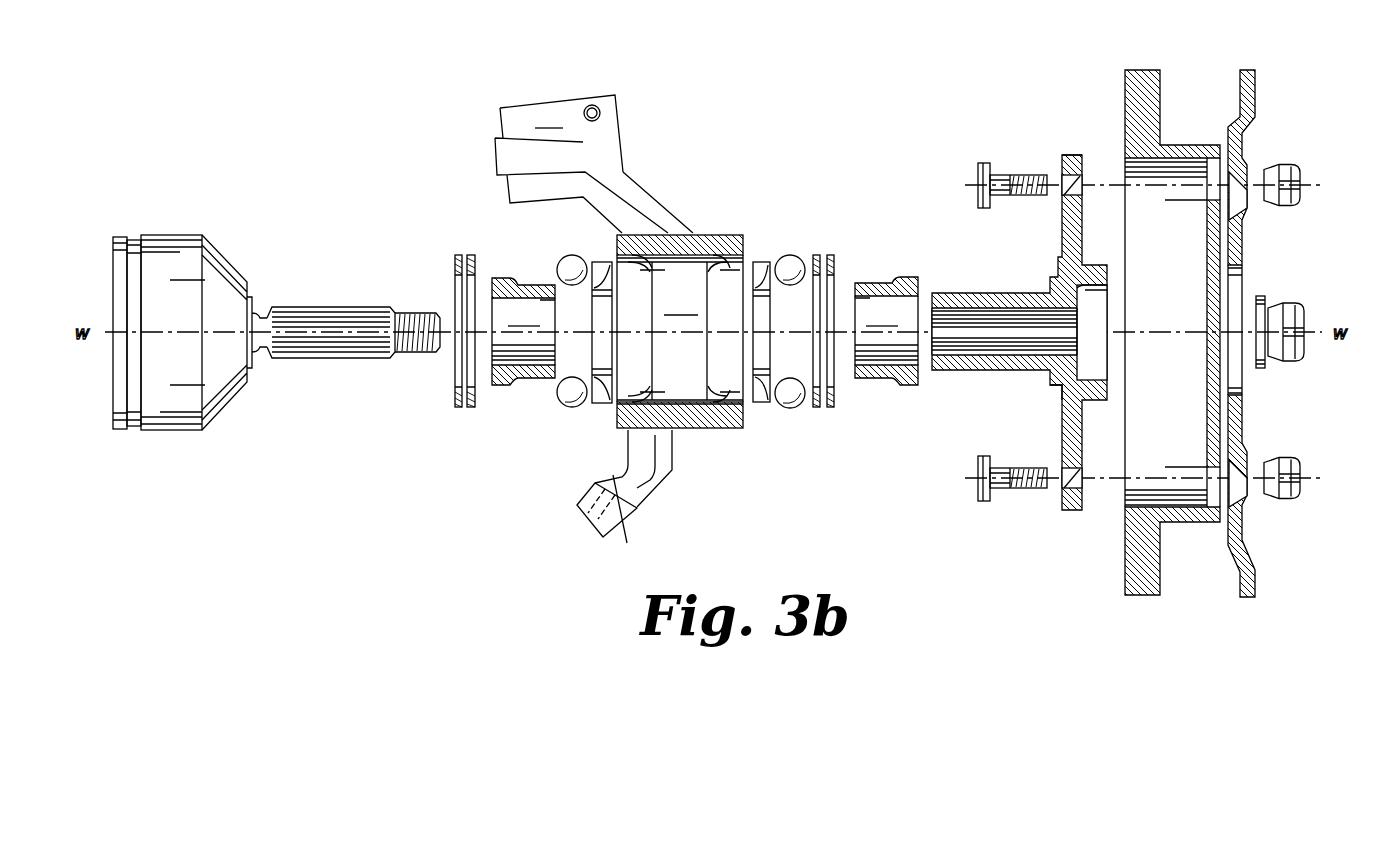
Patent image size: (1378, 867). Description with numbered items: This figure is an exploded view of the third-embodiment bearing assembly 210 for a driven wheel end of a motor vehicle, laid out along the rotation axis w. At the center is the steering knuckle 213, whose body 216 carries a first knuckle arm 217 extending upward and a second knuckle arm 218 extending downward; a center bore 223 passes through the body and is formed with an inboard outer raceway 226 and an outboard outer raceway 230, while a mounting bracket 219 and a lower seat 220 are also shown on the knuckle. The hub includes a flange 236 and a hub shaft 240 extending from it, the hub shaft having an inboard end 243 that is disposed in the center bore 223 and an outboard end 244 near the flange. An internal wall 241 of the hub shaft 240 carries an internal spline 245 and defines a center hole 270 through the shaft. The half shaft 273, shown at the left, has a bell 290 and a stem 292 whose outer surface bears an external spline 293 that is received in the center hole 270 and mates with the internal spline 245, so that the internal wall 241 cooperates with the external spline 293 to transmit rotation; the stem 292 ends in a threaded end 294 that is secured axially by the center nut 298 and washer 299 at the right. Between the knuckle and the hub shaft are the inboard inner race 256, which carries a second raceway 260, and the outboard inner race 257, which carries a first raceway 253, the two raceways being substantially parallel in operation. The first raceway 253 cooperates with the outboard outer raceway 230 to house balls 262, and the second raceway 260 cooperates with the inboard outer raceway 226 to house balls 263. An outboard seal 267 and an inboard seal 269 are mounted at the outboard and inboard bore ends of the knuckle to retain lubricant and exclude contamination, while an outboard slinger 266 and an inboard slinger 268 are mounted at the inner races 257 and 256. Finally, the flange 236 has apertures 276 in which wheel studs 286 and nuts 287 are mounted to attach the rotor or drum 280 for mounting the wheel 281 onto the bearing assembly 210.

The bearing assembly 210 is at (378, 85).
The half shaft 273 is at (172, 226).
The bell 290 is at (177, 432).
The stem 292 is at (320, 362).
The external spline 293 is at (340, 307).
The threaded end 294 is at (422, 312).
The inboard slinger 268 is at (458, 410).
The inboard seal 269 is at (471, 410).
The second raceway 260 is at (515, 278).
The balls 263 is at (566, 263).
The inboard inner race 256 is at (523, 331).
The mounting bracket 219 is at (561, 164).
The first knuckle arm 217 is at (625, 183).
The inboard outer raceway 226 is at (652, 268).
The body 216 is at (695, 238).
The outboard outer raceway 230 is at (756, 262).
The balls 262 is at (790, 258).
The outboard slinger 266 is at (818, 256).
The outboard seal 267 is at (831, 410).
The center bore 223 is at (683, 316).
The steering knuckle 213 is at (603, 416).
The outer race seat 220 is at (718, 403).
The second knuckle arm 218 is at (668, 483).
The outboard inner race 257 is at (886, 331).
The first raceway 253 is at (897, 386).
The inboard end 243 is at (943, 373).
The center hole 270 is at (960, 338).
The outboard end 244 is at (1058, 386).
The internal wall 241 is at (998, 345).
The internal spline 245 is at (1063, 342).
The wheel studs 286 is at (997, 175).
The apertures 276 is at (1085, 175).
The flange 236 is at (1060, 225).
The hub shaft 240 is at (1012, 293).
The rotor or drum 280 is at (1152, 92).
The wheel 281 is at (1253, 100).
The nuts 287 is at (1301, 173).
The center nut 298 is at (1266, 298).
The washer 299 is at (1260, 370).